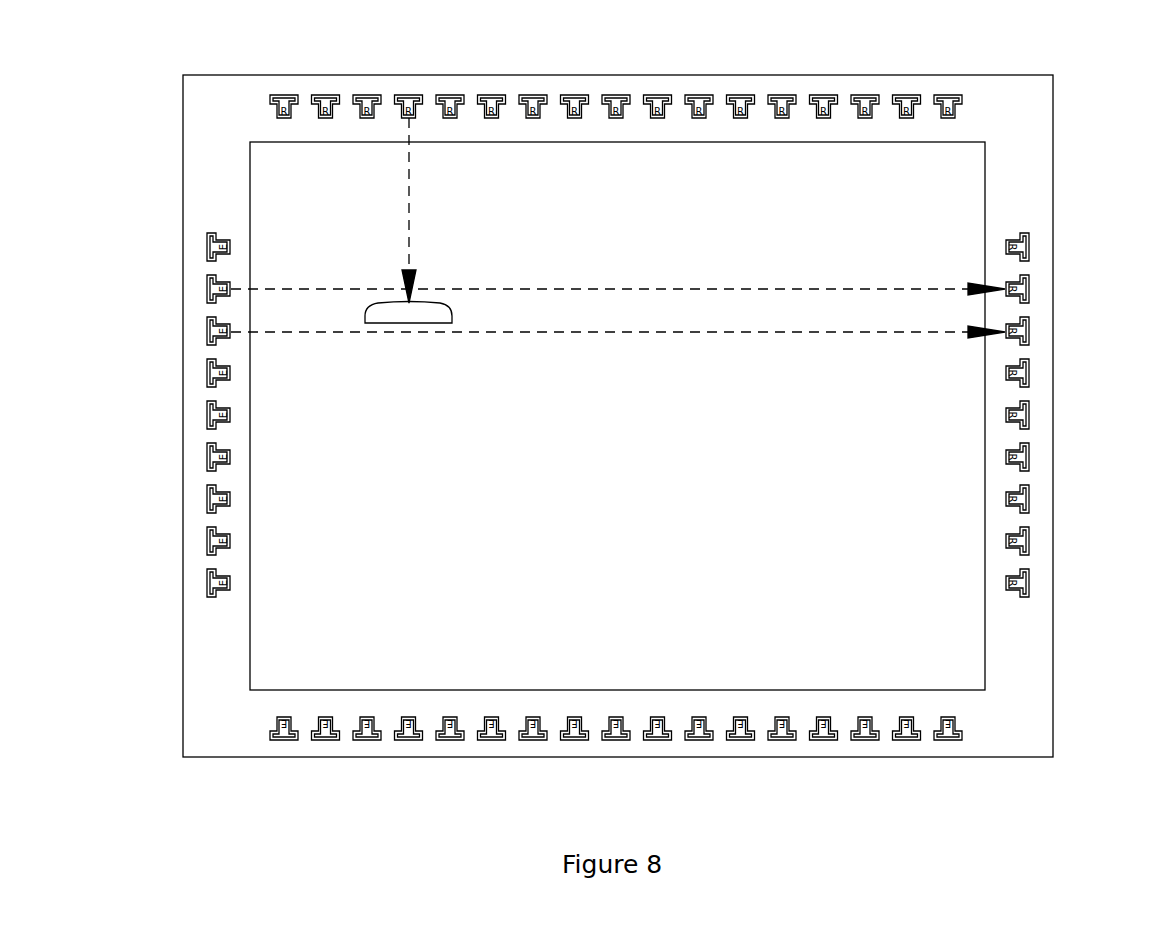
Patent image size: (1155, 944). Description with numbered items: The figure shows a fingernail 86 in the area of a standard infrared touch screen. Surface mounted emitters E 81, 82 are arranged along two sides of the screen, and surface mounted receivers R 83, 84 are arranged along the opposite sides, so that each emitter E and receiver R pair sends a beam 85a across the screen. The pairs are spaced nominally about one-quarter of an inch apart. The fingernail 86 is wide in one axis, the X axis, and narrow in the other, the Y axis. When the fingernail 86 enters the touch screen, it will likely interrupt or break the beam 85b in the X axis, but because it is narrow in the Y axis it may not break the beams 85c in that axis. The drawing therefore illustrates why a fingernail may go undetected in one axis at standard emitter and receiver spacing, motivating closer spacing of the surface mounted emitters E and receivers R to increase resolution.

The surface mounted emitters 81 is at (207, 277).
The surface mounted emitters 82 is at (338, 740).
The surface mounted receivers 83 is at (1029, 367).
The surface mounted receivers 84 is at (781, 95).
The beam 85a is at (330, 287).
The beam 85b is at (405, 183).
The beams 85c is at (515, 325).
The fingernail 86 is at (432, 324).